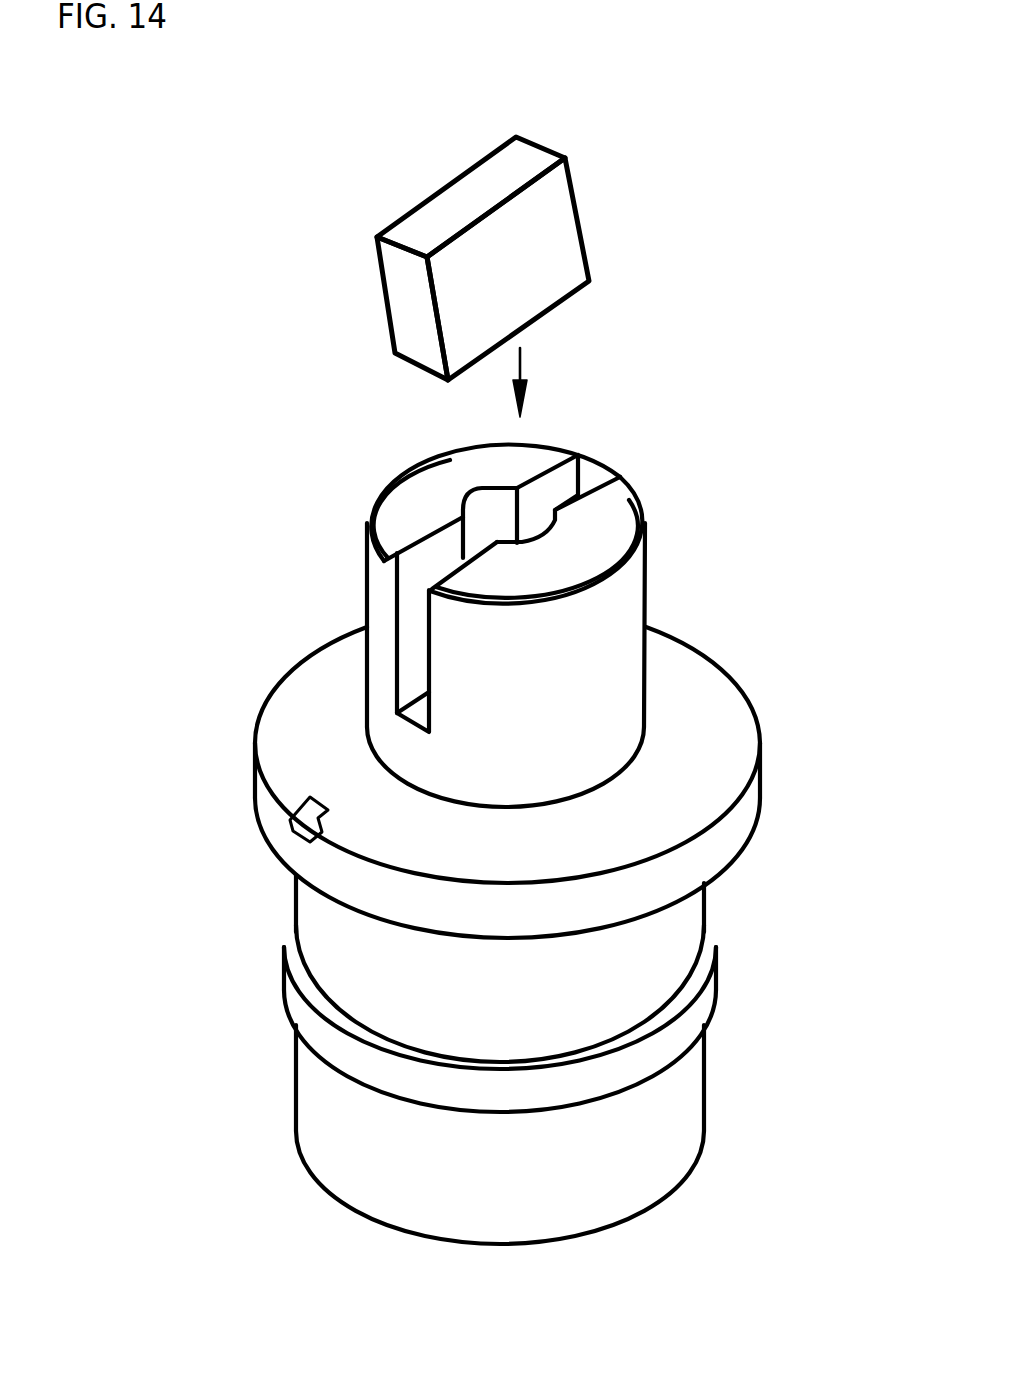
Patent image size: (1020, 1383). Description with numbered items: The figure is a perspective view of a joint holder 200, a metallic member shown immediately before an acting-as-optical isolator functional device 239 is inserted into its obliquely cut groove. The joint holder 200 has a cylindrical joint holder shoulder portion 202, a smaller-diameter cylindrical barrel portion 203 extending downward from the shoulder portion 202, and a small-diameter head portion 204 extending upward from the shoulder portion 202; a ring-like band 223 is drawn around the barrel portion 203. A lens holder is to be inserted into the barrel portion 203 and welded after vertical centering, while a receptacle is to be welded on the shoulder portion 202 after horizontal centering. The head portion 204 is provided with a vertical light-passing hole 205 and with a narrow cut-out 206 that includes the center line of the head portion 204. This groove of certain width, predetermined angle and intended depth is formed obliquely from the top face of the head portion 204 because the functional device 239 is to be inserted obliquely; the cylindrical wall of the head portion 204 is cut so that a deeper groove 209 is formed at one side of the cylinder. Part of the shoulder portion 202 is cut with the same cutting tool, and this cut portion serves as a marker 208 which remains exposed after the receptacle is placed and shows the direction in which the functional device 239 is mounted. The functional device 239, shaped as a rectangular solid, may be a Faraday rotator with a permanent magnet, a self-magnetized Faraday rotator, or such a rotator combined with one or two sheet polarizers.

The joint holder 200 is at (143, 702).
The joint holder shoulder portion 202 is at (720, 732).
The barrel portion 203 is at (314, 1106).
The head portion 204 is at (380, 602).
The vertical light-passing hole 205 is at (488, 507).
The cut-out 206 is at (443, 557).
The marker 208 is at (293, 820).
The deeper groove 209 is at (413, 713).
The ring 223 is at (299, 1006).
The acting-as-optical isolator functional device 239 is at (558, 248).